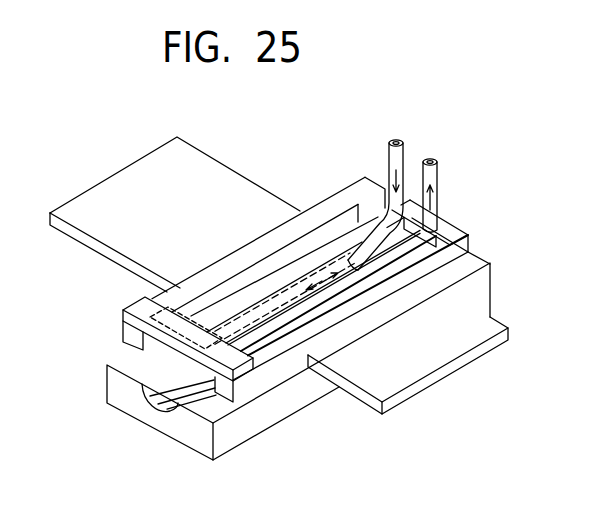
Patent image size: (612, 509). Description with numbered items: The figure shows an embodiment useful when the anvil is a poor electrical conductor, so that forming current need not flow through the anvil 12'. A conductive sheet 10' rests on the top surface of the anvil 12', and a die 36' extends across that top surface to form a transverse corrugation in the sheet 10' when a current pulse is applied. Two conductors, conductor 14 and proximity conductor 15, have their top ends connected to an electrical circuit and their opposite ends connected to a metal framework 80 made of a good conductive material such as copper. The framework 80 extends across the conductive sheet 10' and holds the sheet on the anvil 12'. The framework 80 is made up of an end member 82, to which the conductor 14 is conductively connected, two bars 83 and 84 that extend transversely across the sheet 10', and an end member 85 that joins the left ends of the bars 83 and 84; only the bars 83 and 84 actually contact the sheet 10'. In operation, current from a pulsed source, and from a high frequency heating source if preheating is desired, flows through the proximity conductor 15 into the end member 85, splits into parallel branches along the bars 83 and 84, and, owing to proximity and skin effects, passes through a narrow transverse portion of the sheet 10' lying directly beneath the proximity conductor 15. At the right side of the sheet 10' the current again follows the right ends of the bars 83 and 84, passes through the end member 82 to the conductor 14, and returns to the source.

The conductive sheet 10' is at (305, 275).
The anvil 12' is at (291, 360).
The conductor 14 is at (438, 176).
The proximity conductor 15 is at (388, 166).
The die 36' is at (154, 409).
The metal framework 80 is at (319, 289).
The end member 82 is at (452, 230).
The bar 83 is at (273, 238).
The bar 84 is at (375, 308).
The end member 85 is at (135, 299).